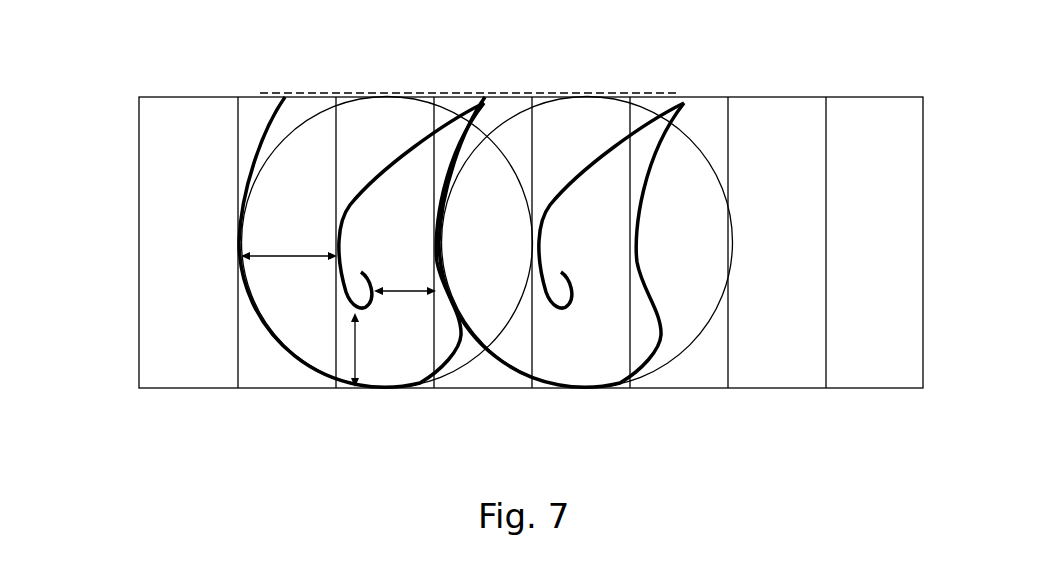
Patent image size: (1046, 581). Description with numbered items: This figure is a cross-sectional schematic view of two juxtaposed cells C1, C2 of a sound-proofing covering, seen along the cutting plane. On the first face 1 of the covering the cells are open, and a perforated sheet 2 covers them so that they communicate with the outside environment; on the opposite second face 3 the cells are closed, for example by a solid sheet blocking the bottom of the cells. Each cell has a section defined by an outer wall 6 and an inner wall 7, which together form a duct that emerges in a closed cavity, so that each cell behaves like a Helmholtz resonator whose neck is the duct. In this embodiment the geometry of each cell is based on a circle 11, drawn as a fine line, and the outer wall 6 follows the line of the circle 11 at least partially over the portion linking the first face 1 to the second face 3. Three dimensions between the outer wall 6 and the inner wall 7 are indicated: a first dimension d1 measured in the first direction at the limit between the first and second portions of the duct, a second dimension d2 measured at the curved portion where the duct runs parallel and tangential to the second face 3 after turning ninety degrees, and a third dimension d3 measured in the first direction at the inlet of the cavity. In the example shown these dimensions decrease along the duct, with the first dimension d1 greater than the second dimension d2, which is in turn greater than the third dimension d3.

The first face 1 is at (860, 88).
The perforated sheet 2 is at (605, 97).
The second face 3 is at (847, 408).
The outer wall 6 is at (238, 241).
The inner wall 7 is at (386, 163).
The circle 11 is at (688, 139).
The first cell C1 is at (283, 352).
The second cell C2 is at (509, 350).
The first dimension d1 is at (289, 241).
The second dimension d2 is at (370, 350).
The third dimension d3 is at (405, 276).